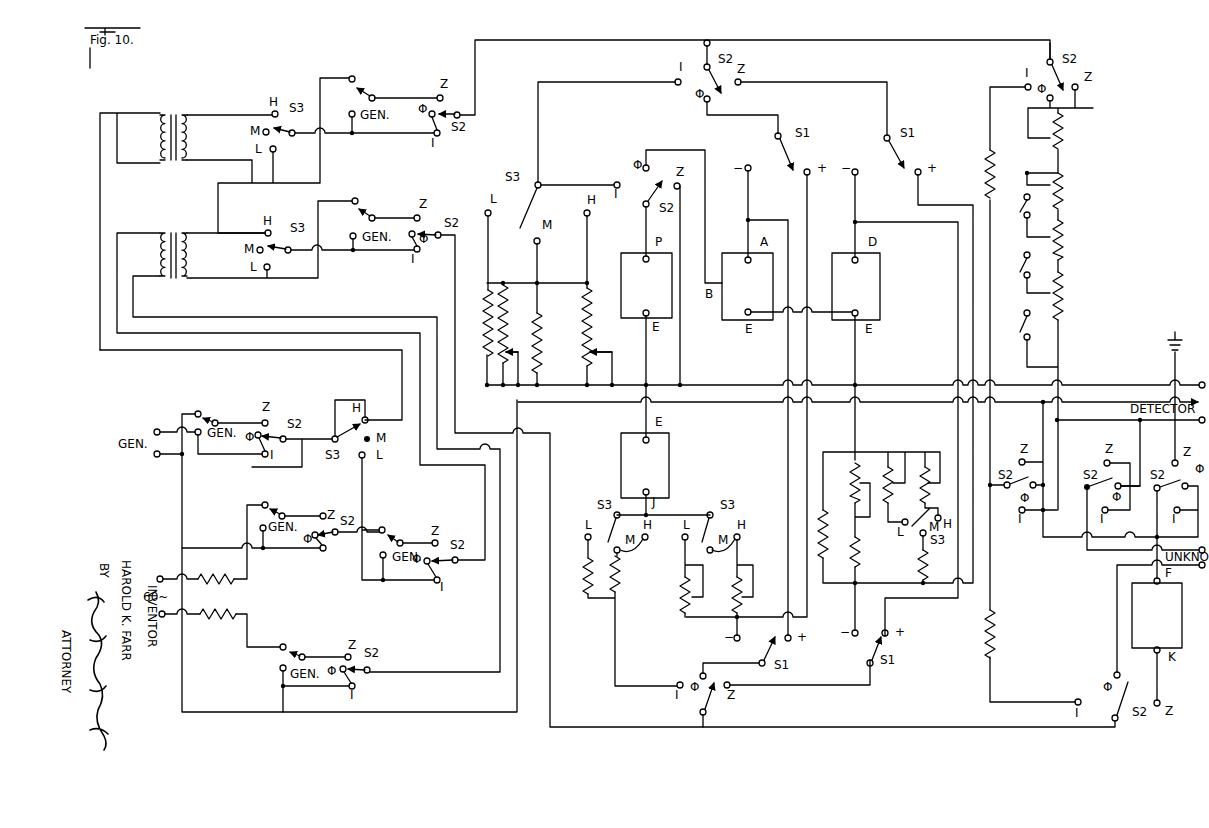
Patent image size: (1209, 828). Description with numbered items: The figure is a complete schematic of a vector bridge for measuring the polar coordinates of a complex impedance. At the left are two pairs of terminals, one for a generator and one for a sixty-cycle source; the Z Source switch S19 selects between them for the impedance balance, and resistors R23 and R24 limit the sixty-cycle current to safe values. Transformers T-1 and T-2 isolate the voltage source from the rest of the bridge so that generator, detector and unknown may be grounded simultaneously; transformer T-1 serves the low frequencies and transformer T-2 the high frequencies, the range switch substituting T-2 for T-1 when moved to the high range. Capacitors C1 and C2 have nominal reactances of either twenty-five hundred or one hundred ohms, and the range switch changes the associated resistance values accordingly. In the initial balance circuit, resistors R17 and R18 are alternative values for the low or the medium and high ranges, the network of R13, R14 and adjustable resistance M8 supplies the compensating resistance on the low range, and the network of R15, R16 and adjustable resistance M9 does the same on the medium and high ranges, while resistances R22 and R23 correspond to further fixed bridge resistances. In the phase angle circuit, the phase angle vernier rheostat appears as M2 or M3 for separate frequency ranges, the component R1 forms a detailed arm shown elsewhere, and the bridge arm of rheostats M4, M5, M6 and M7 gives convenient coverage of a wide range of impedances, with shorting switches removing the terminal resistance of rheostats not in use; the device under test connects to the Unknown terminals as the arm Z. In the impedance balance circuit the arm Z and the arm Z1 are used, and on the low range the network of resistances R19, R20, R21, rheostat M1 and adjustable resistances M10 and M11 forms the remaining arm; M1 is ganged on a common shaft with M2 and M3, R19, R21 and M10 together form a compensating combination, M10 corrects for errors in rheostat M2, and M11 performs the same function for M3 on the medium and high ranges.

The transformer T-1 is at (170, 268).
The transformer T-2 is at (170, 148).
The component R1 is at (747, 286).
The resistor R13 is at (476, 323).
The resistor R14 is at (514, 312).
The resistor R15 is at (555, 343).
The resistor R16 is at (600, 327).
The resistor R17 is at (573, 573).
The resistor R18 is at (630, 576).
The resistance R19 is at (842, 534).
The resistance R20 is at (868, 552).
The resistance R21 is at (937, 565).
The resistance R22 is at (1008, 634).
The resistor R23 is at (596, 367).
The resistor R24 is at (218, 624).
The rheostat M1 is at (846, 483).
The phase angle vernier rheostat M2 is at (671, 594).
The phase angle vernier rheostat M3 is at (756, 586).
The rheostat M4 is at (1086, 131).
The rheostat M5 is at (1087, 191).
The rheostat M6 is at (1091, 240).
The rheostat M7 is at (1096, 296).
The adjustable resistance M8 is at (520, 335).
The adjustable resistance M9 is at (612, 364).
The adjustable resistance M10 is at (878, 485).
The adjustable resistance M11 is at (916, 485).
The capacitor C1 is at (646, 285).
The capacitor C2 is at (645, 465).
The arm |Z1| Z1 is at (856, 286).
The arm |Z| Z is at (1157, 615).
The Z Source switch S19 is at (318, 358).